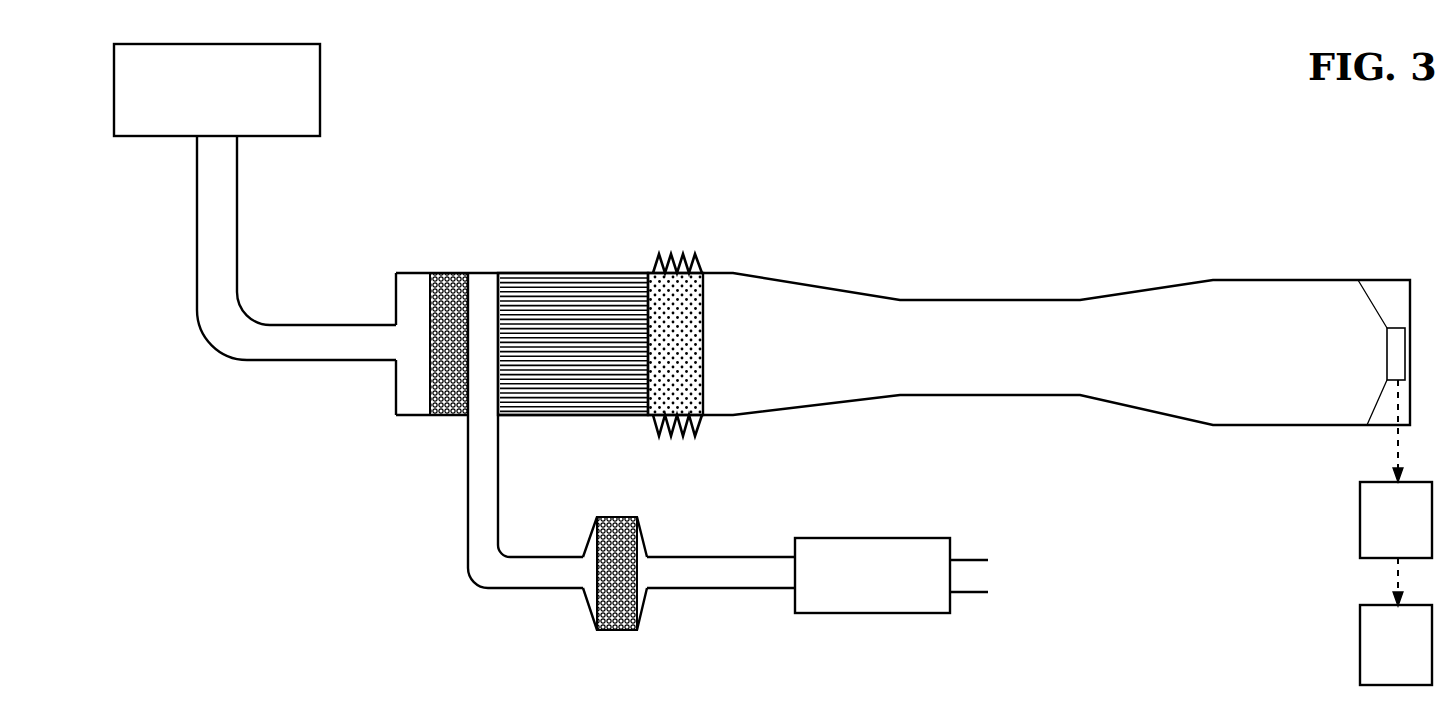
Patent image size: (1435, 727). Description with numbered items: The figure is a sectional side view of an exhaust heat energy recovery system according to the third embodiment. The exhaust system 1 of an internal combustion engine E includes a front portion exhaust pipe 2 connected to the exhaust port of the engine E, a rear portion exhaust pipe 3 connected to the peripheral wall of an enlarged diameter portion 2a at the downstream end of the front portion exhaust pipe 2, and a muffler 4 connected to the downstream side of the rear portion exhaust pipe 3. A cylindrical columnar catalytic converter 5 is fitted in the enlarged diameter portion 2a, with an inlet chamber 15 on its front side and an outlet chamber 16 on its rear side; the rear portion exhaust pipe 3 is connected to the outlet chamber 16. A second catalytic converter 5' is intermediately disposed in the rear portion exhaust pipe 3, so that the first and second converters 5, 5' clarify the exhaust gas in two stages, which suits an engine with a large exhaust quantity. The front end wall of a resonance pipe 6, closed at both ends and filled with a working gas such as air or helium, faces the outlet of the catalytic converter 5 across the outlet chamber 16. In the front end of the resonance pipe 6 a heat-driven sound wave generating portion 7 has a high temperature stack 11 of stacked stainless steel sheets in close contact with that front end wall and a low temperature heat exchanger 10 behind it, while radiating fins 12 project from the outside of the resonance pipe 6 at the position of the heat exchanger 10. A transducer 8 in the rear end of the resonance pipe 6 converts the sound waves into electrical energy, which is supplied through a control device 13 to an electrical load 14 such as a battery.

The exhaust system 1 is at (799, 246).
The front portion exhaust pipe 2 is at (213, 257).
The enlarged diameter portion 2a is at (417, 275).
The rear portion exhaust pipe 3 is at (537, 580).
The muffler 4 is at (860, 590).
The catalytic converter 5 is at (449, 304).
The second catalytic converter 5' is at (640, 601).
The resonance pipe 6 is at (950, 302).
The sound wave generating portion 7 is at (600, 260).
The transducer 8 is at (1397, 328).
The low temperature heat exchanger 10 is at (664, 290).
The high temperature stack 11 is at (541, 300).
The radiating fins 12 is at (703, 433).
The control device 13 is at (1378, 537).
The electrical load 14 is at (1378, 662).
The inlet chamber 15 is at (417, 388).
The outlet chamber 16 is at (488, 385).
The internal combustion engine E is at (205, 109).